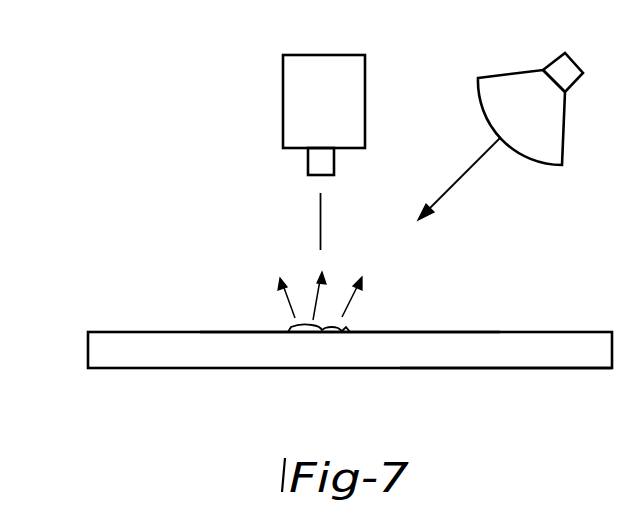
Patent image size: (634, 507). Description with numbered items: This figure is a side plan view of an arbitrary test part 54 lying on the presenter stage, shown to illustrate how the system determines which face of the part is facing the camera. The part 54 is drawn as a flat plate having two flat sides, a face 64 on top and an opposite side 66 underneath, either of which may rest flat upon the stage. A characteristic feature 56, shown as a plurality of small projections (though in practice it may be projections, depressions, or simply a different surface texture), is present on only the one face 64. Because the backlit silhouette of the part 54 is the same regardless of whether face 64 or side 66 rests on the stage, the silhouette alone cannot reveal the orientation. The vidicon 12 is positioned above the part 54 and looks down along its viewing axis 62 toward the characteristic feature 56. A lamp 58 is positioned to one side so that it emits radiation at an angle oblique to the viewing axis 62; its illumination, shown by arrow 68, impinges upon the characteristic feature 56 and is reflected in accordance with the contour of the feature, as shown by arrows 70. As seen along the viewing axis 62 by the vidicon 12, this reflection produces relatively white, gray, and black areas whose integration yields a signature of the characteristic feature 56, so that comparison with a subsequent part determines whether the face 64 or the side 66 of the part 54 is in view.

The vidicon 12 is at (286, 96).
The lamp 58 is at (548, 132).
The arrow 68 is at (458, 177).
The viewing axis 62 is at (320, 212).
The characteristic feature 56 is at (308, 323).
The arrows 70 is at (355, 297).
The part 54 is at (243, 288).
The face 64 is at (555, 335).
The side 66 is at (542, 372).